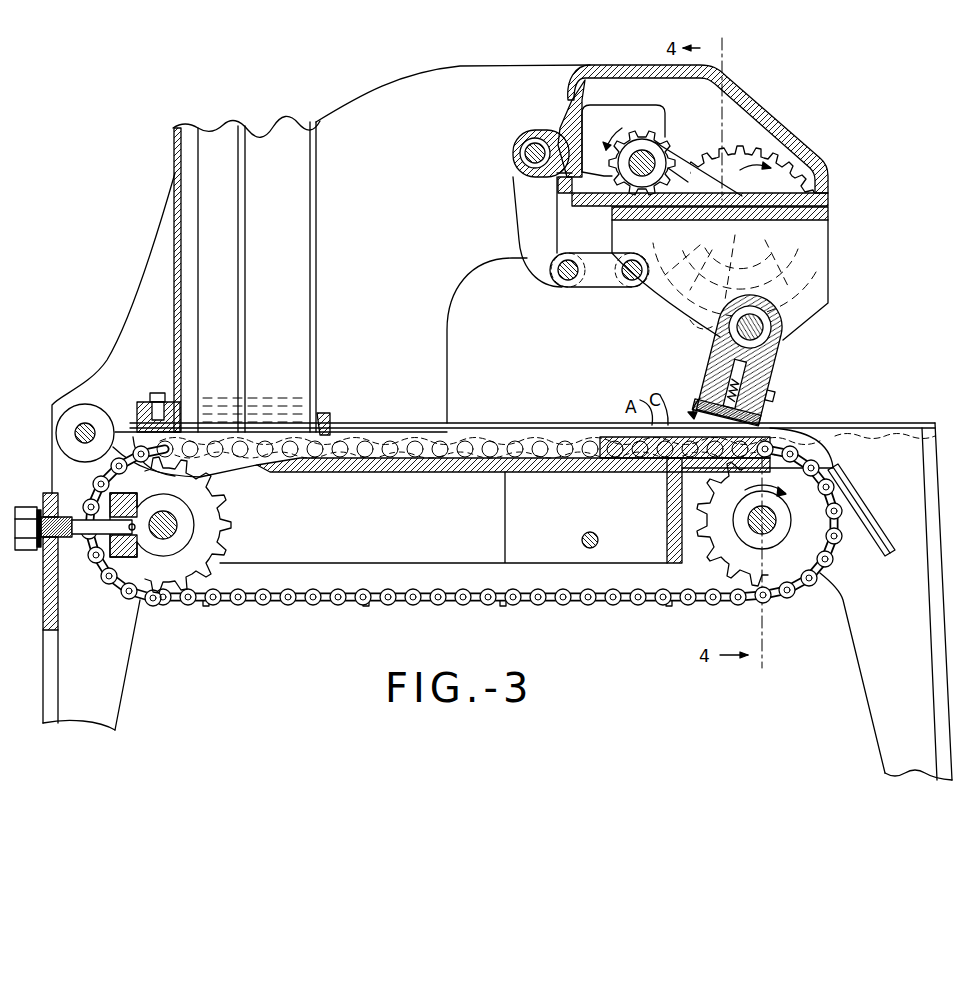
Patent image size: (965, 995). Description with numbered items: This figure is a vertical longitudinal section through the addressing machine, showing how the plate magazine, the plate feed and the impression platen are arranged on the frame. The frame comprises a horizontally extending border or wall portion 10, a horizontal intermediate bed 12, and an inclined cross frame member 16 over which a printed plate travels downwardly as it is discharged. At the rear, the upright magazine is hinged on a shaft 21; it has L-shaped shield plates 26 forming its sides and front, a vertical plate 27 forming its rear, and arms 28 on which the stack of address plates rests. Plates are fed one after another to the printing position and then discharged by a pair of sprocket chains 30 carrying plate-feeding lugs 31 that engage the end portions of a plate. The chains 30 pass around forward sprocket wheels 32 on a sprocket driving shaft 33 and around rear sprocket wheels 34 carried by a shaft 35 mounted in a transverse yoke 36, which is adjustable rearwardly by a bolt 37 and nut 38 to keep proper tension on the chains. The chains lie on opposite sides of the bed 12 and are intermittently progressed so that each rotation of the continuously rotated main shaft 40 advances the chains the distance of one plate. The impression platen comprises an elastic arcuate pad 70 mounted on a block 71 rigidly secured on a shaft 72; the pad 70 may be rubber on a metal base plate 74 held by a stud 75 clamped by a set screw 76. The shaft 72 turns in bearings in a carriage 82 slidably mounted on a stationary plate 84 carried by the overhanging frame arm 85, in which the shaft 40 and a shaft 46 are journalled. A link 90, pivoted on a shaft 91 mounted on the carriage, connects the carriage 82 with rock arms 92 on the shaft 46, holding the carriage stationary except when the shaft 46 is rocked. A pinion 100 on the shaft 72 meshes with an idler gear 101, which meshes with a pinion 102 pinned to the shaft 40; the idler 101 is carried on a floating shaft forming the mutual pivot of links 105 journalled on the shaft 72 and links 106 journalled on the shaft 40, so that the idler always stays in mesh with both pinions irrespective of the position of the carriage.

The wall portion 10 is at (443, 517).
The intermediate bed 12 is at (433, 473).
The inclined cross frame member 16 is at (866, 518).
The shaft 21 is at (73, 433).
The shield plate 26 is at (318, 228).
The vertical plate 27 is at (182, 197).
The arms 28 is at (243, 467).
The sprocket chains 30 is at (342, 593).
The plate-feeding lugs 31 is at (330, 425).
The forward sprocket wheels 32 is at (744, 524).
The sprocket driving shaft 33 is at (748, 516).
The rear sprocket wheels 34 is at (222, 522).
The shaft 35 is at (176, 526).
The transverse yoke 36 is at (155, 510).
The bolt 37 is at (72, 546).
The nut 38 is at (23, 509).
The main shaft 40 is at (641, 150).
The shaft 46 is at (536, 142).
The elastic arcuate pad 70 is at (756, 419).
The block 71 is at (766, 354).
The shaft 72 is at (778, 316).
The metal base plate 74 is at (687, 400).
The stud 75 is at (760, 381).
The set screw 76 is at (777, 393).
The carriage 82 is at (830, 208).
The stationary plate 84 is at (830, 199).
The overhanging frame arm 85 is at (706, 80).
The link 90 is at (597, 281).
The shaft 91 is at (633, 262).
The rock arms 92 is at (528, 216).
The pinion 100 is at (714, 319).
The idler gear 101 is at (744, 175).
The pinion 102 is at (662, 140).
The links 105 is at (755, 247).
The links 106 is at (666, 162).